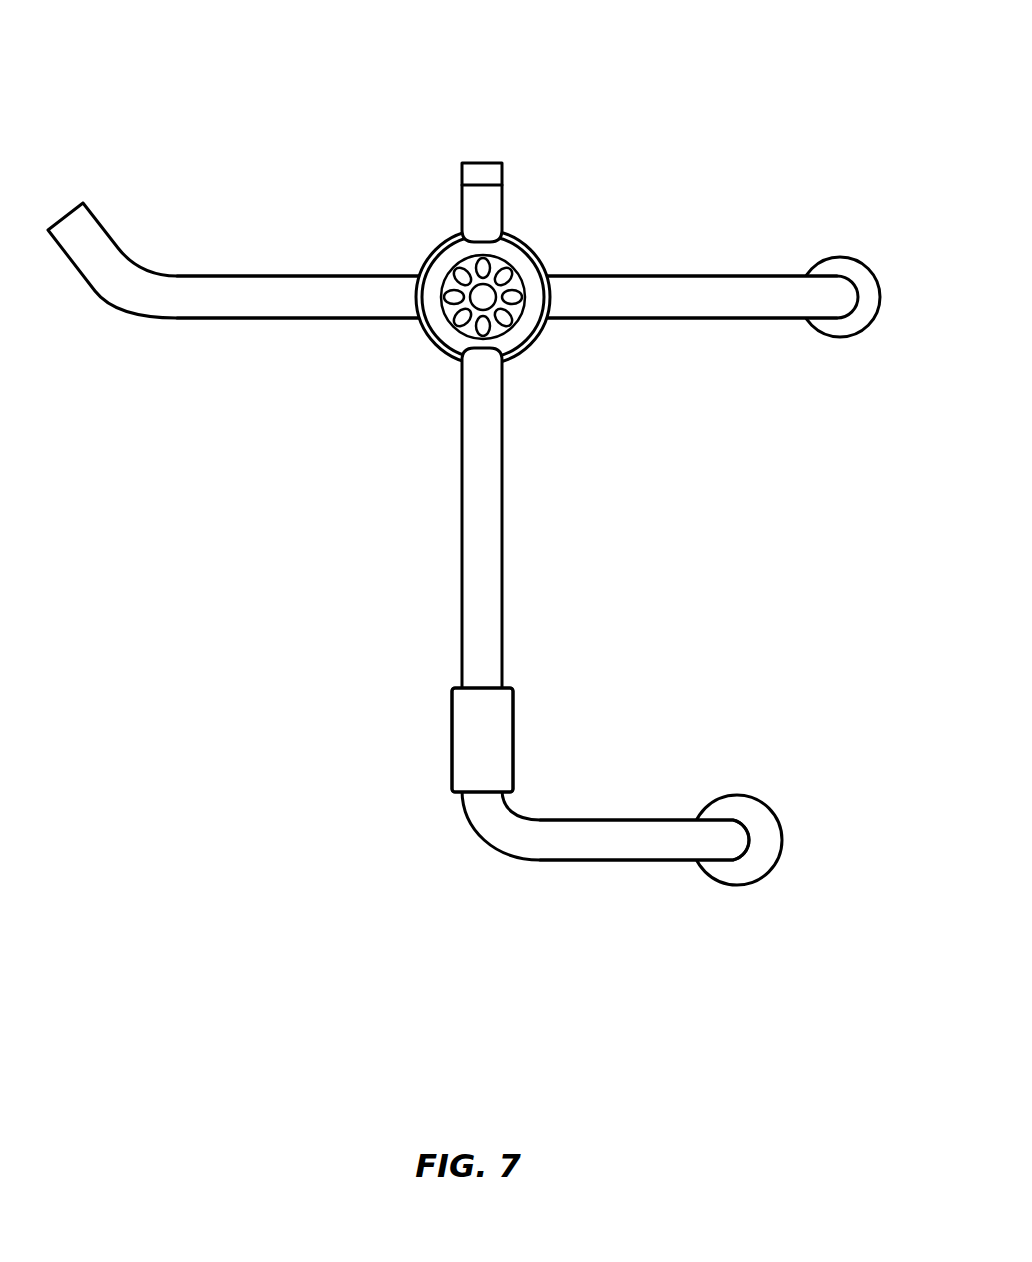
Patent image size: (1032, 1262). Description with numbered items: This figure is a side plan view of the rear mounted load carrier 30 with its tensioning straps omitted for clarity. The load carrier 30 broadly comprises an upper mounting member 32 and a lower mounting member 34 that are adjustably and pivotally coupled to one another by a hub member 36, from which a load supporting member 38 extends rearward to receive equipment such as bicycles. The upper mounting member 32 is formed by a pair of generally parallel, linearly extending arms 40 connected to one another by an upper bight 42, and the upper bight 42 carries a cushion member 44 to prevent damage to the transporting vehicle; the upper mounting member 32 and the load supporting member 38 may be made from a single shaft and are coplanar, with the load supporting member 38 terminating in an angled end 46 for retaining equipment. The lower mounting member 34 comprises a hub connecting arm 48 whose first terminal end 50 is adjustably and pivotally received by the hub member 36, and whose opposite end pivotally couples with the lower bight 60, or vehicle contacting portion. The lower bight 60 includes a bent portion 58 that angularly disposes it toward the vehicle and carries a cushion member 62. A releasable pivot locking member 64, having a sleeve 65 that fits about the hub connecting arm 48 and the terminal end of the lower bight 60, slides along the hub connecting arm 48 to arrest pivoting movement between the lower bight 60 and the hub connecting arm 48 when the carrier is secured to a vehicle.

The rear mounted load carrier 30 is at (640, 93).
The upper mounting member 32 is at (729, 205).
The lower mounting member 34 is at (673, 911).
The hub member 36 is at (437, 353).
The load supporting member 38 is at (293, 283).
The parallel arm 40 is at (628, 285).
The upper bight 42 is at (835, 297).
The cushion member 44 is at (835, 258).
The angled end 46 is at (93, 248).
The hub connecting arm 48 is at (462, 522).
The first terminal end 50 is at (480, 162).
The bent portion 58 is at (498, 832).
The lower bight 60 is at (727, 835).
The cushion member 62 is at (733, 793).
The releasable pivot locking member 64 is at (470, 734).
The sleeve 65 is at (487, 748).